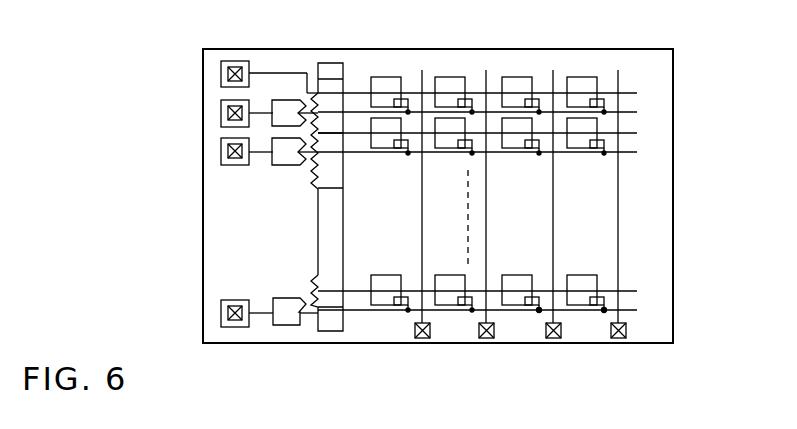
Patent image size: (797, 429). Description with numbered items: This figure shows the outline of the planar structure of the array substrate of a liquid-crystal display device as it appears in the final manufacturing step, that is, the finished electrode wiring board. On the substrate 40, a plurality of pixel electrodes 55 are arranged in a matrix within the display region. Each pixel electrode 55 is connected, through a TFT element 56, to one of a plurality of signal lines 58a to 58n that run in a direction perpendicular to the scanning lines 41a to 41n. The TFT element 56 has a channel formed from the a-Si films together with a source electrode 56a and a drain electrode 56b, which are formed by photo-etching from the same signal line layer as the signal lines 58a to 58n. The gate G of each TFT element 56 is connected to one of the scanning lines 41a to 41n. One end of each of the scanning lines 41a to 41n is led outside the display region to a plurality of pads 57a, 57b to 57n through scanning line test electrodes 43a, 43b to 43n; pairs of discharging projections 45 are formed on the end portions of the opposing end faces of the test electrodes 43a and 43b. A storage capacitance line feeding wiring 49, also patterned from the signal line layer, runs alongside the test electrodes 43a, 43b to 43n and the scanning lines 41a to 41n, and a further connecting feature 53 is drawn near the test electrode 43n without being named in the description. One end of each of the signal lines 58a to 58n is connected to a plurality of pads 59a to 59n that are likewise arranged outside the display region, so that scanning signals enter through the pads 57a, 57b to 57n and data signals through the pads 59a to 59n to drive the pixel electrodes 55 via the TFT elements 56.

The substrate 40 is at (655, 65).
The scanning line 41a is at (637, 111).
The scanning line 41n is at (640, 310).
The gate G is at (640, 152).
The scanning line test electrode 43a is at (285, 108).
The scanning line test electrode 43b is at (273, 160).
The scanning line test electrode 43n is at (285, 318).
The discharging projections 45 is at (313, 100).
The storage capacitance line feeding wiring 49 is at (338, 70).
The connection portion 53 is at (318, 284).
The pixel electrode 55 is at (580, 92).
The TFT element 56 is at (594, 320).
The source electrode 56a is at (546, 315).
The drain electrode 56b is at (603, 316).
The pad 57a is at (221, 73).
The pad 57b is at (221, 118).
The pad 57n is at (232, 327).
The signal line 58a is at (422, 205).
The signal line 58n is at (618, 210).
The pad 59a is at (422, 345).
The pad 59n is at (627, 329).